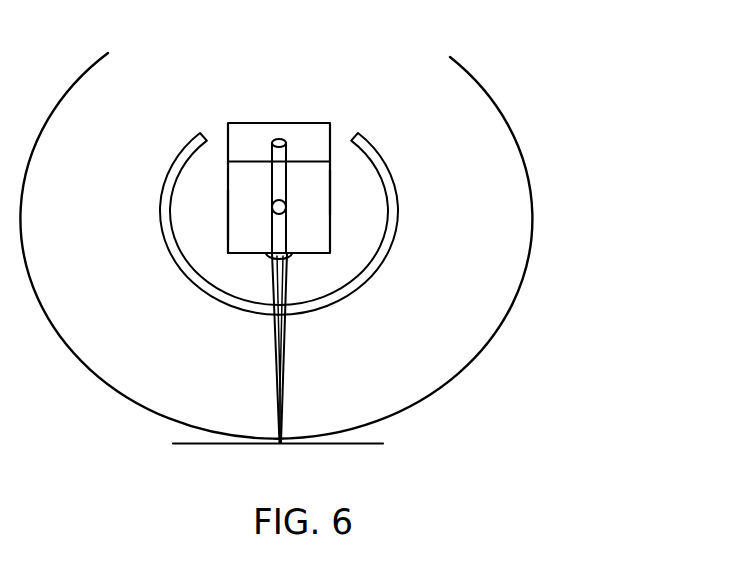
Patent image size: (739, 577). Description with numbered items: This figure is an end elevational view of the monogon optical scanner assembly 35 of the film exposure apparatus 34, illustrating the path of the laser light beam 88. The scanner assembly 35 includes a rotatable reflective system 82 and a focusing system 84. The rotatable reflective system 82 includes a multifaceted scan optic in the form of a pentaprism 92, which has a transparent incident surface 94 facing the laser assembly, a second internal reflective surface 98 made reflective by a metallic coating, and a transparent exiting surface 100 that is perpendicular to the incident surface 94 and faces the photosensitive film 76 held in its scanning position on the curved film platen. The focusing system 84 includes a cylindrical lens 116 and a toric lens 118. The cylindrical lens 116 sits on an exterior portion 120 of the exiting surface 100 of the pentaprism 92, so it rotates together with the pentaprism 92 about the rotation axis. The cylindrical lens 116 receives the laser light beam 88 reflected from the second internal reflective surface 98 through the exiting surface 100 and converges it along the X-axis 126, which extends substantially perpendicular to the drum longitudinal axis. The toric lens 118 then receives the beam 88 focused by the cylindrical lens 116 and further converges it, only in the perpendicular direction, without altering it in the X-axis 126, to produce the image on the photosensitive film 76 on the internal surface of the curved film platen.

The film exposure apparatus 34 is at (330, 231).
The monogon optical scanner assembly 35 is at (340, 83).
The photosensitive film 76 is at (530, 247).
The rotatable reflective system 82 is at (273, 191).
The focusing system 84 is at (317, 282).
The laser light beam 88 is at (295, 345).
The pentaprism 92 is at (332, 189).
The incident surface 94 is at (228, 215).
The second internal reflective surface 98 is at (242, 132).
The exiting surface 100 is at (238, 253).
The cylindrical lens 116 is at (267, 253).
The toric lens 118 is at (367, 279).
The exterior portion 120 is at (257, 253).
The X-axis 126 is at (190, 445).